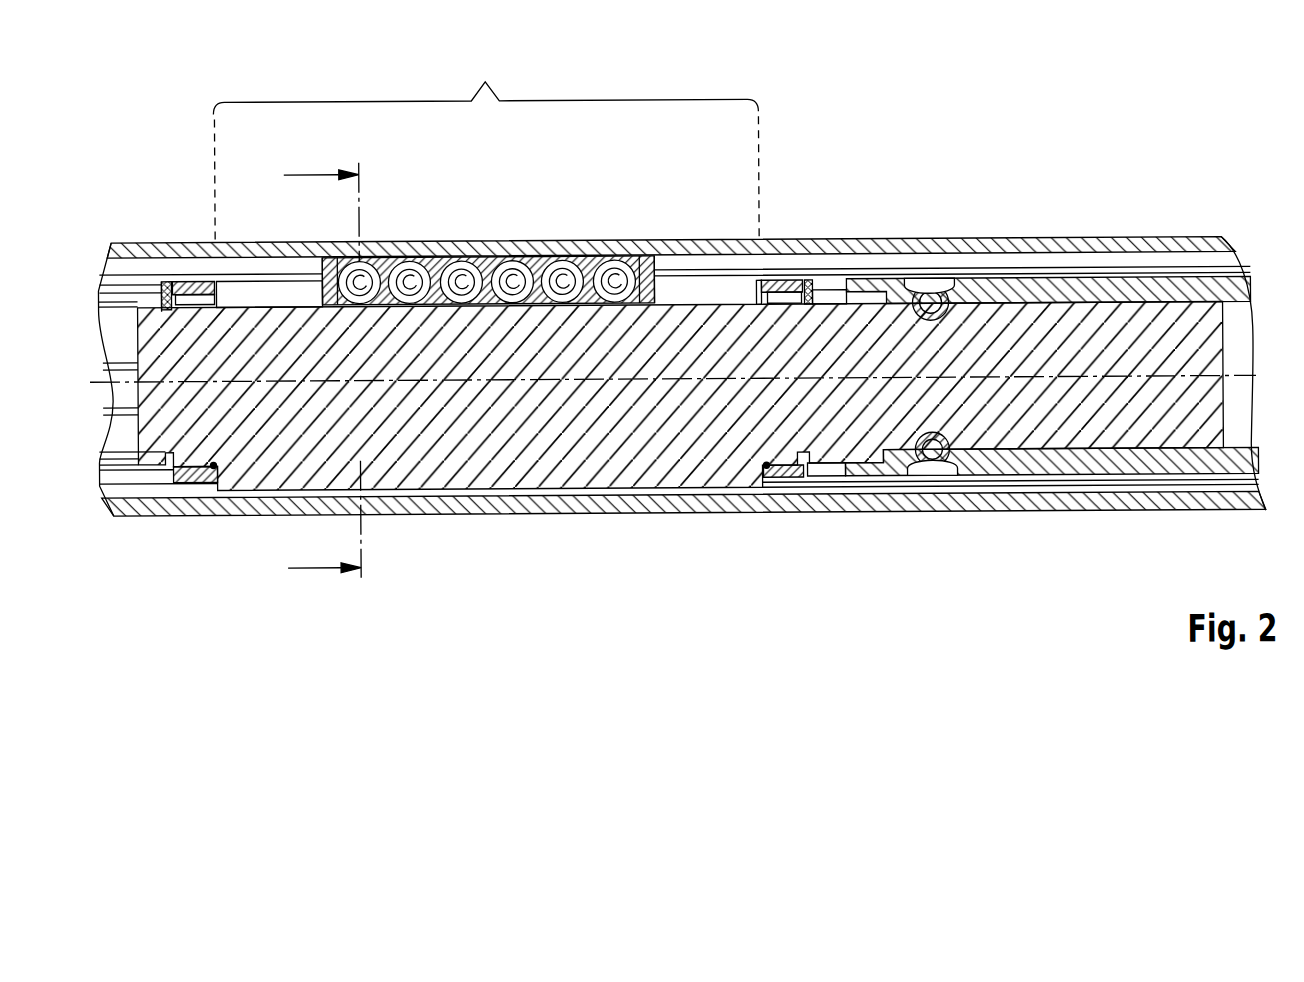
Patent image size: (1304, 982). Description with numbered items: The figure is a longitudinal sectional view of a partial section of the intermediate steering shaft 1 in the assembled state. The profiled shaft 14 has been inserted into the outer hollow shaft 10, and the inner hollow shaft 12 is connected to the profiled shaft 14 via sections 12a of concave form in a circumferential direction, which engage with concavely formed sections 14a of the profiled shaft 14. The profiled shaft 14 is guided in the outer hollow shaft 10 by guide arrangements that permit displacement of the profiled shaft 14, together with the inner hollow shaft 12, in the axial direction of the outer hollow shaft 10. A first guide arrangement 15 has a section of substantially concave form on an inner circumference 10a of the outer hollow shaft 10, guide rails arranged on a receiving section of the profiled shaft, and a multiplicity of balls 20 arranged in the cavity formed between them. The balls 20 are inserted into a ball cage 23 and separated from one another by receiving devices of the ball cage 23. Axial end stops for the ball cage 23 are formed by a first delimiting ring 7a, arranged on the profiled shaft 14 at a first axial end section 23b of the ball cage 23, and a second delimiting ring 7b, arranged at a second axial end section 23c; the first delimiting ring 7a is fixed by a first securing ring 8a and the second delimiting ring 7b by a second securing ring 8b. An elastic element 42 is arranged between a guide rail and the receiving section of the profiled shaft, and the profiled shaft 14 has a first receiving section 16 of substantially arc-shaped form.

The intermediate steering shaft 1 is at (677, 323).
The first delimiting ring 7a is at (192, 281).
The second delimiting ring 7b is at (785, 281).
The first securing ring 8a is at (170, 281).
The second securing ring 8b is at (820, 283).
The outer hollow shaft 10 is at (487, 228).
The inner circumference of the outer hollow shaft 10a is at (935, 266).
The inner hollow shaft 12 is at (1033, 371).
The sections of concave form of the inner hollow shaft 12a is at (933, 481).
The profiled shaft 14 is at (600, 464).
The concavely formed sections of the profiled shaft 14a is at (957, 474).
The first guide arrangement 15 is at (432, 249).
The first receiving section 16 is at (487, 319).
The balls 20 is at (612, 264).
The ball cage 23 is at (471, 374).
The first axial end section of the ball cage 23b is at (329, 281).
The second axial end section of the ball cage 23c is at (646, 279).
The elastic element 42 is at (215, 467).